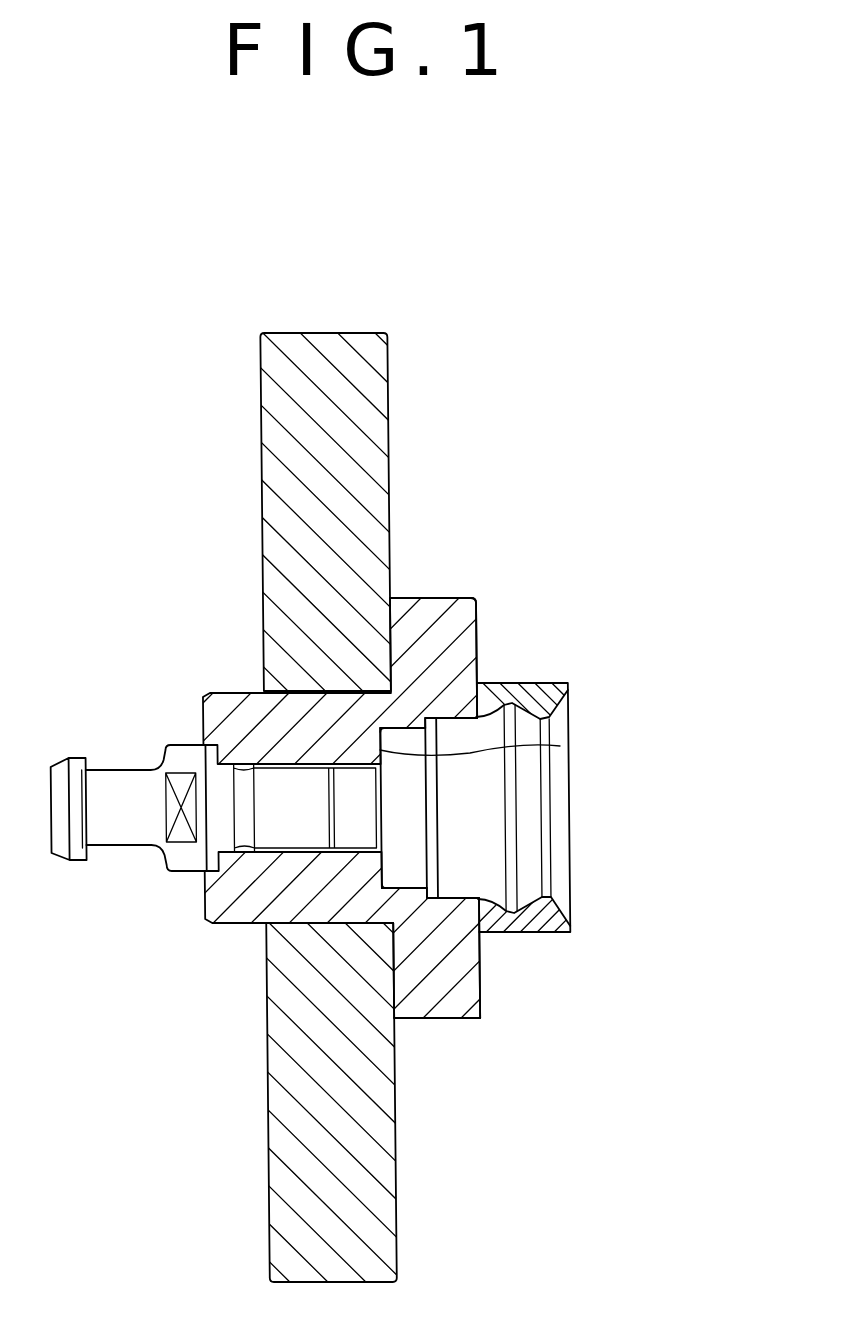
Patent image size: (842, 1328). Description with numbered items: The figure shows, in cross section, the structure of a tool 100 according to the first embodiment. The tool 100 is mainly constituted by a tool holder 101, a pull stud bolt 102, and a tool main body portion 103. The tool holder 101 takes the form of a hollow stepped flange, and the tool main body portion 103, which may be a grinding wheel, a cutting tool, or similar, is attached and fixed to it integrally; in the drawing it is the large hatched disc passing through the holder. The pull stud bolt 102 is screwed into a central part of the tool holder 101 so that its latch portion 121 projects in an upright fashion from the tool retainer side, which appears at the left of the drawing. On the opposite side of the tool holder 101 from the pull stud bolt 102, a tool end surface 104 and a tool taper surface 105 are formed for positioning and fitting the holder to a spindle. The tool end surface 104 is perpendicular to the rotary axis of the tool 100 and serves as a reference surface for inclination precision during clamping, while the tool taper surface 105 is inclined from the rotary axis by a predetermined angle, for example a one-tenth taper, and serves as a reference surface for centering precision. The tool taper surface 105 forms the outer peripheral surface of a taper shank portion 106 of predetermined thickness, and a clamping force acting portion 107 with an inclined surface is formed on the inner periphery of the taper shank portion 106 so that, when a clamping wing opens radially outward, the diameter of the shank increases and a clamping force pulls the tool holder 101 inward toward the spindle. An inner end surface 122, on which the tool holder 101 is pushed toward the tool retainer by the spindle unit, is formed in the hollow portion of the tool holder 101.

The tool 100 is at (438, 378).
The tool holder 101 is at (430, 615).
The pull stud bolt 102 is at (118, 787).
The tool main body portion 103 is at (270, 392).
The tool end surface 104 is at (478, 645).
The tool taper surface 105 is at (550, 683).
The taper shank portion 106 is at (526, 922).
The clamping force acting portion 107 is at (535, 895).
The latch portion 121 is at (88, 857).
The inner end surface 122 is at (560, 746).